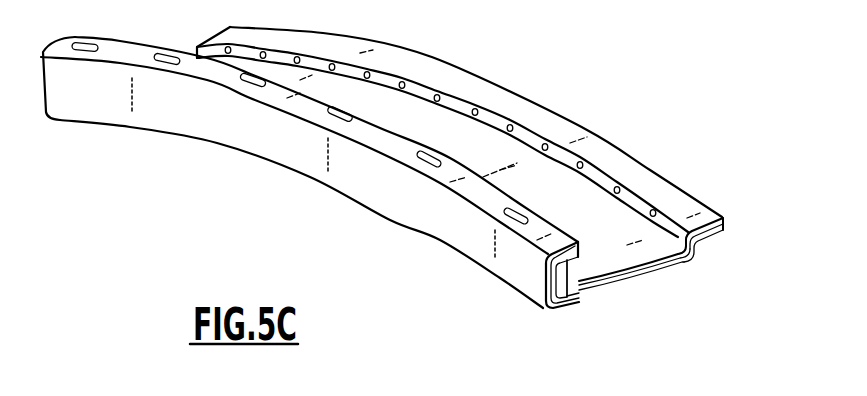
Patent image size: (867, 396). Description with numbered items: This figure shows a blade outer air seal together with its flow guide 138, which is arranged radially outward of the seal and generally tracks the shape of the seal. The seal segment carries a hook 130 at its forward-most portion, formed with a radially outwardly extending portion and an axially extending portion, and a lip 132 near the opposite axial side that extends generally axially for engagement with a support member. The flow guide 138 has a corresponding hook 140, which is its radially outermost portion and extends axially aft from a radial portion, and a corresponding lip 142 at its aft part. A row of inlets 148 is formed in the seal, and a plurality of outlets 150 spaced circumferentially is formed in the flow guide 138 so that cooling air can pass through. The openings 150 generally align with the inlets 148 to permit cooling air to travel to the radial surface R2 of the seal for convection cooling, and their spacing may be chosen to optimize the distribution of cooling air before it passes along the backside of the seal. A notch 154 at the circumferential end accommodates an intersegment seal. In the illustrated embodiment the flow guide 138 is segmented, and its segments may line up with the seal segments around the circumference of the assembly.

The hook 130 is at (541, 258).
The flow guide 138 is at (552, 128).
The inlets 148 is at (427, 163).
The outlets 150 is at (661, 209).
The lip 142 is at (717, 216).
The lip 132 is at (718, 234).
The hook 140 is at (565, 272).
The notch 154 is at (597, 281).
The radial surface R2 is at (650, 267).